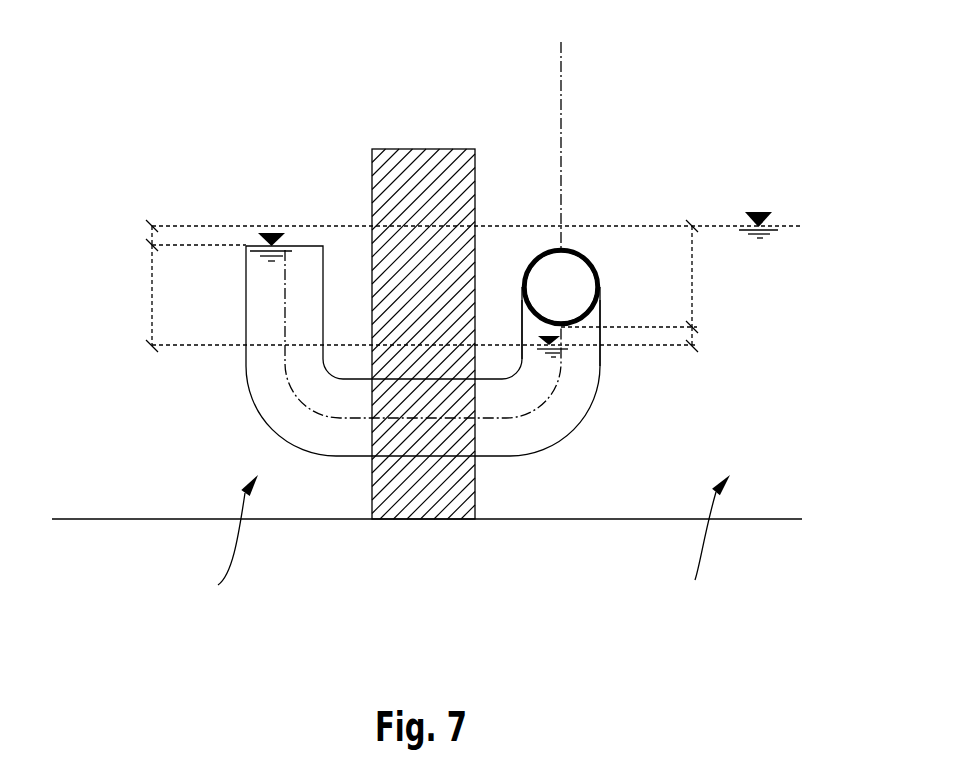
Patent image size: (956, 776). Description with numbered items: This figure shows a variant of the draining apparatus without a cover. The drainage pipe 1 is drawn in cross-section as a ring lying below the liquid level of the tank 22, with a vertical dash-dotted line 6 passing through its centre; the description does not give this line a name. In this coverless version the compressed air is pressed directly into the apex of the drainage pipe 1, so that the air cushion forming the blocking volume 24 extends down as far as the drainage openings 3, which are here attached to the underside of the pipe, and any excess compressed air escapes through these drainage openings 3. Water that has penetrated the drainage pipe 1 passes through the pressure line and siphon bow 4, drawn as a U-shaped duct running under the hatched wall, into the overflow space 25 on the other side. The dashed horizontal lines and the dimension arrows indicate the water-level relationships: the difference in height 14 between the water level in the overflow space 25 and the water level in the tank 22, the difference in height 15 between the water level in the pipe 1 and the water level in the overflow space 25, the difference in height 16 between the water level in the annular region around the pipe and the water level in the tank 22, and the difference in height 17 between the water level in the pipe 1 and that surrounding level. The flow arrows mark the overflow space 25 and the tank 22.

The drainage pipe 1 is at (584, 258).
The drainage openings 3 is at (563, 328).
The pressure line and siphon bow 4 is at (562, 418).
The axis 6 is at (562, 92).
The difference in height 14 is at (143, 236).
The difference in height 15 is at (143, 294).
The difference in height 16 is at (697, 283).
The difference in height 17 is at (697, 338).
The tank 22 is at (693, 539).
The blocking volume 24 is at (577, 283).
The overflow space 25 is at (221, 539).